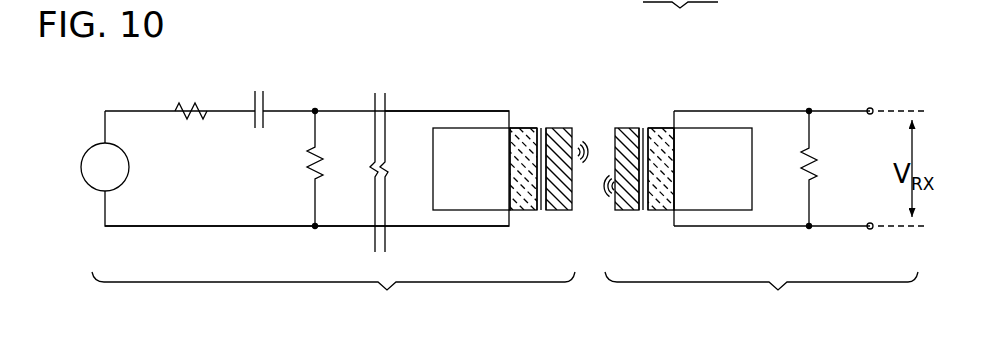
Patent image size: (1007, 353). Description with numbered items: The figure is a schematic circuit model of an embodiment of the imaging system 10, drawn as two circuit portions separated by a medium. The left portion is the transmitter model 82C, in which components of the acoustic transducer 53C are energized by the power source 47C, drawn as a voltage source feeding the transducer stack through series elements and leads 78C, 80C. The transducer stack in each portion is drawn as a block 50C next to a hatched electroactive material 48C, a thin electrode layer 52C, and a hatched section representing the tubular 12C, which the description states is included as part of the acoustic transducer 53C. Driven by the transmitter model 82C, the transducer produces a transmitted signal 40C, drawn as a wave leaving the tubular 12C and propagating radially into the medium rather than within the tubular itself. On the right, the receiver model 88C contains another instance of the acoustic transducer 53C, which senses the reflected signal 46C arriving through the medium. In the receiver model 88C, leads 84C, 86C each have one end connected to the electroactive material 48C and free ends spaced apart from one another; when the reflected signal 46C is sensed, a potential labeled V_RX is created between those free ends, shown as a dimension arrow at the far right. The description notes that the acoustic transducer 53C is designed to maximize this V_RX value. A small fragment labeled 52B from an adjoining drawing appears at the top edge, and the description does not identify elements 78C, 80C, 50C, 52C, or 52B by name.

The imaging system 10 is at (231, 82).
The power source 47C is at (91, 146).
The second electrode lead 80C is at (342, 231).
The first electrode lead 78C is at (437, 111).
The backing / housing block 50C is at (496, 181).
The electroactive material 48C is at (525, 211).
The acoustic transducer 53C is at (529, 113).
The electrode 52C is at (540, 211).
The tubular 12C is at (555, 130).
The transmitted signal 40C is at (589, 131).
The reflected signal 46C is at (597, 208).
The lead 84C is at (858, 108).
The lead 86C is at (858, 229).
The transmitter model 82C is at (389, 292).
The receiver model 88C is at (770, 292).
The electrode 52B is at (681, 12).